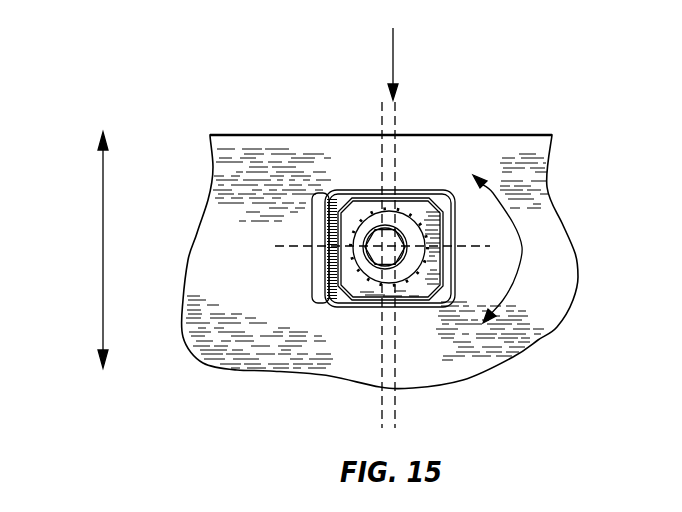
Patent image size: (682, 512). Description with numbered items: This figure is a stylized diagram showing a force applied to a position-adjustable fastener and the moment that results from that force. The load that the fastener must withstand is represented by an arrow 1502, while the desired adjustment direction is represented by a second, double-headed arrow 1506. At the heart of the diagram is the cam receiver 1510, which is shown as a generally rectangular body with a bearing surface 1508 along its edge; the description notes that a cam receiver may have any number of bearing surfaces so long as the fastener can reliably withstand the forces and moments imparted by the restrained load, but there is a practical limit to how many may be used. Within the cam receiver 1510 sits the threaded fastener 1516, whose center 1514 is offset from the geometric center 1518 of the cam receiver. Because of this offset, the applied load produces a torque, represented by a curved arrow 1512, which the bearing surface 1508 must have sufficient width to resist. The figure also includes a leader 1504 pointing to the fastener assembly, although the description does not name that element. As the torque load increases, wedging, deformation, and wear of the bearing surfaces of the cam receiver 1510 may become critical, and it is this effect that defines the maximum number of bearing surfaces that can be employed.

The arrow representing load 1502 is at (395, 56).
The socket flange 1504 is at (290, 233).
The arrow representing adjustment direction 1506 is at (103, 257).
The bearing surface 1508 is at (417, 190).
The cam receiver 1510 is at (412, 268).
The arrow representing torque 1512 is at (523, 240).
The center of threaded fastener 1514 is at (375, 270).
The threaded fastener 1516 is at (358, 268).
The geometric center of cam receiver 1518 is at (402, 270).